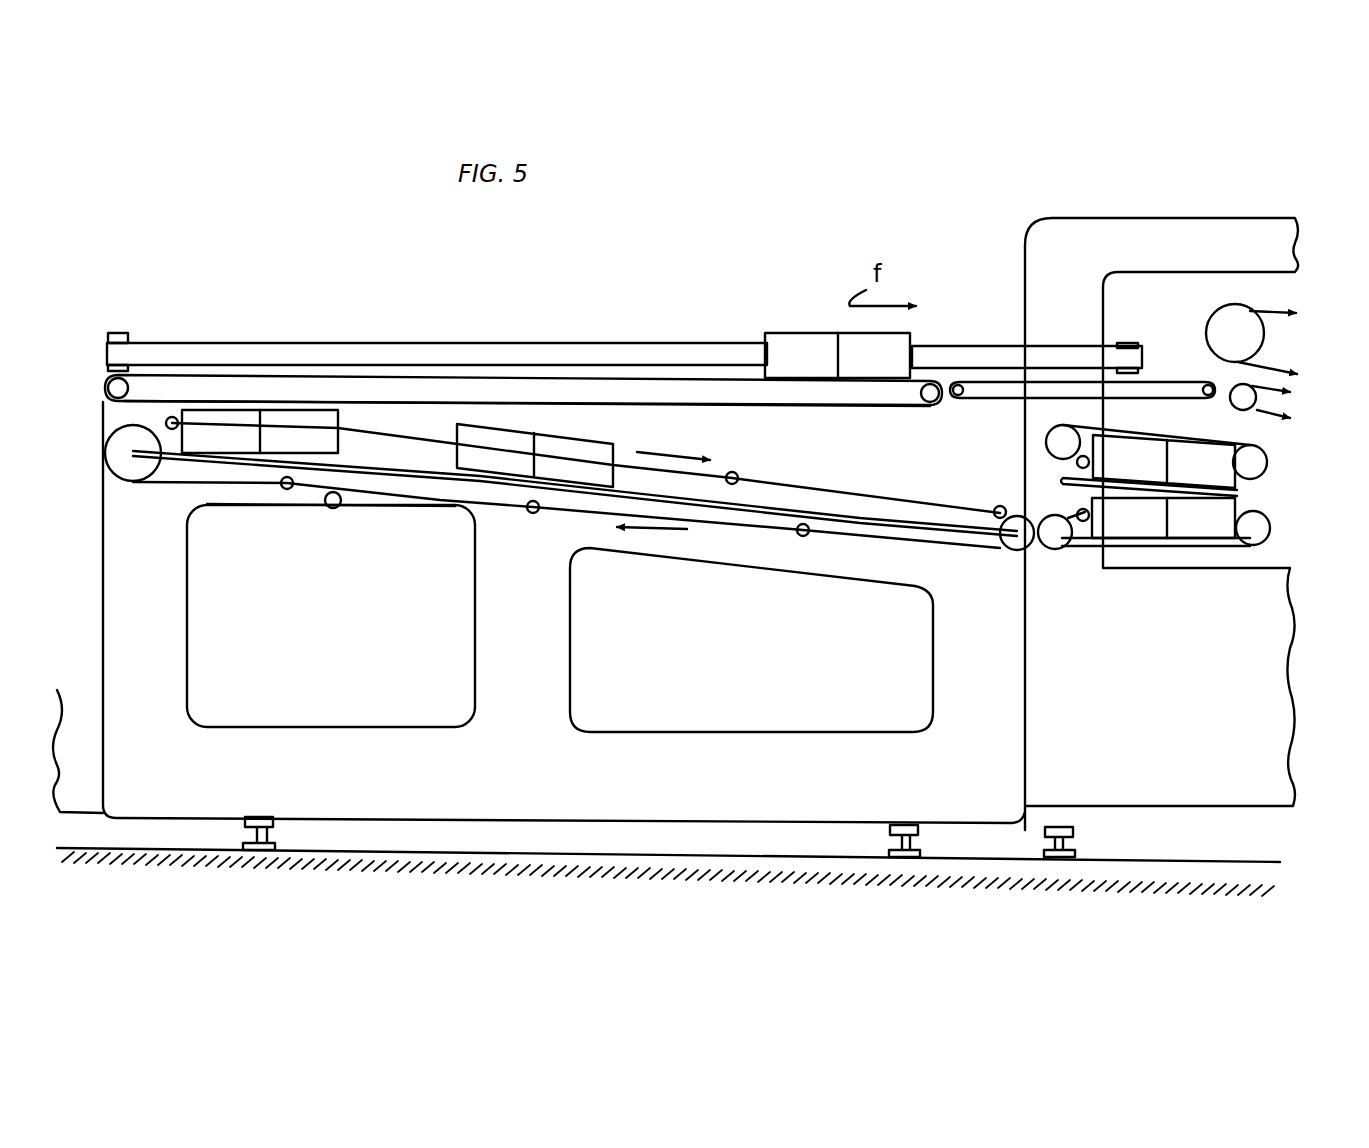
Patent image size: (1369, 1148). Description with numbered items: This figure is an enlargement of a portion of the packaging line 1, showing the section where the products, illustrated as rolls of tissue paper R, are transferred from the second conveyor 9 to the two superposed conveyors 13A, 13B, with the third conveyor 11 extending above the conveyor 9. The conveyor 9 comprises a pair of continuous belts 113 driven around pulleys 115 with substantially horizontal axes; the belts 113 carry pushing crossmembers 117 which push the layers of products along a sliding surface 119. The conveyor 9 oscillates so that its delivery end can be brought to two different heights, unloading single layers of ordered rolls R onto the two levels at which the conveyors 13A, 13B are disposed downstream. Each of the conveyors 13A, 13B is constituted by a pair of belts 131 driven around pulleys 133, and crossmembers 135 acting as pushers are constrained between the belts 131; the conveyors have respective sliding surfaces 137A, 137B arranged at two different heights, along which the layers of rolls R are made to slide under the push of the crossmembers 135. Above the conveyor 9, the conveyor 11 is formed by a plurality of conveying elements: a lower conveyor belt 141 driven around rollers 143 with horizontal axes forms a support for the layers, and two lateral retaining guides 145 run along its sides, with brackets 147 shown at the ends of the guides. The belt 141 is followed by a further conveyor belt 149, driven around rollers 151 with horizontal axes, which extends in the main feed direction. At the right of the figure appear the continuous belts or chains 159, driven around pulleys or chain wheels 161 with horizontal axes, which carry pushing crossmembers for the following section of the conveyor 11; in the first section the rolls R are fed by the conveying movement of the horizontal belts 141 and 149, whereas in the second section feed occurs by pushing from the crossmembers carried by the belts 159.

The line 1 is at (369, 254).
The second conveyor 9 is at (536, 518).
The third conveyor 11 is at (1047, 280).
The superposed conveyor 13A is at (1102, 565).
The superposed conveyor 13B is at (1131, 466).
The continuous belts 113 is at (745, 542).
The pulleys 115 is at (122, 465).
The crossmembers 117 is at (173, 430).
The sliding surface 119 is at (417, 478).
The belts 131 is at (1120, 430).
The pulleys 133 is at (1060, 440).
The crossmembers 135 is at (1078, 512).
The sliding surface 137A is at (1160, 544).
The sliding surface 137B is at (1240, 490).
The lower conveyor belt 141 is at (550, 386).
The rollers 143 is at (108, 396).
The lateral retaining guides 145 is at (462, 352).
The bracket 147 is at (122, 332).
The conveyor belt 149 is at (1070, 378).
The rollers 151 is at (965, 280).
The continuous belts or chains 159 is at (1262, 318).
The pulleys or chain wheels 161 is at (1240, 314).
The rolls of tissue paper R is at (845, 350).